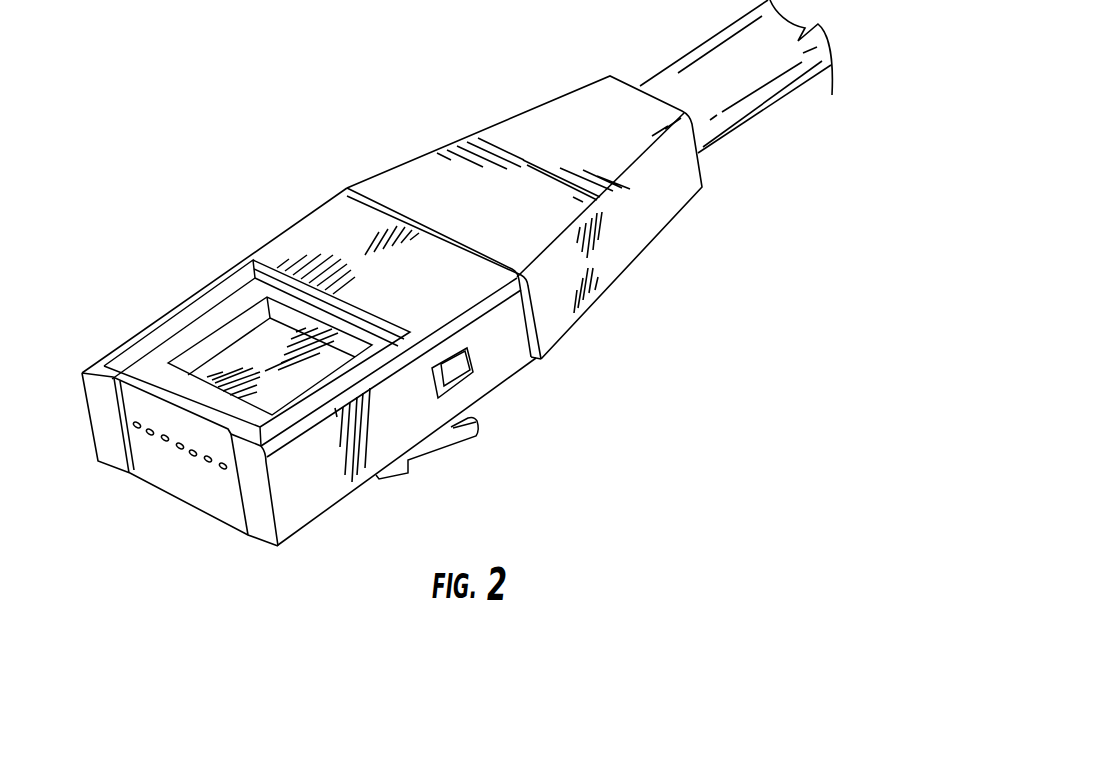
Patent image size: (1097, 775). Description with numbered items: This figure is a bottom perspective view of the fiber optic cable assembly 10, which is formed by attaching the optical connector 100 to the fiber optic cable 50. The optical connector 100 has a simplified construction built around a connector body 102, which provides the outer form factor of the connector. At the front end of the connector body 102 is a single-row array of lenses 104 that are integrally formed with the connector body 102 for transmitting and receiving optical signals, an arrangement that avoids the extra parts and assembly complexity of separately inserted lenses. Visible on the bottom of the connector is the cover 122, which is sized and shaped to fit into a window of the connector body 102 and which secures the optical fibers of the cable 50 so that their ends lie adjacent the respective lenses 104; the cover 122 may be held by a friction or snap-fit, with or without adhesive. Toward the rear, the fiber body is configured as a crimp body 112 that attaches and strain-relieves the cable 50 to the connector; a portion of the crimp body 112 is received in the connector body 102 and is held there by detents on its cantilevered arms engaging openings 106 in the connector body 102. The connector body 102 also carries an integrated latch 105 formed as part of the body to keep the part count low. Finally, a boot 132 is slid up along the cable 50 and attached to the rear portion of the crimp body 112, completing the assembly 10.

The fiber optic cable assembly 10 is at (147, 156).
The fiber optic cable 50 is at (700, 47).
The optical connector 100 is at (338, 463).
The connector body 102 is at (307, 213).
The lenses 104 is at (208, 463).
The integrated latch 105 is at (450, 438).
The openings 106 is at (465, 383).
The crimp body 112 is at (543, 362).
The cover 122 is at (213, 330).
The boot 132 is at (622, 243).